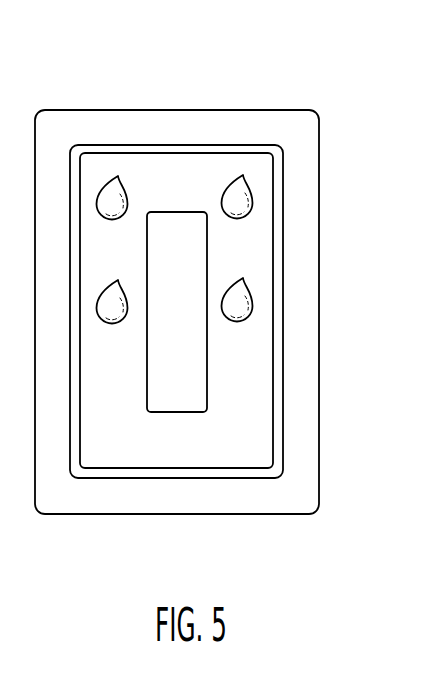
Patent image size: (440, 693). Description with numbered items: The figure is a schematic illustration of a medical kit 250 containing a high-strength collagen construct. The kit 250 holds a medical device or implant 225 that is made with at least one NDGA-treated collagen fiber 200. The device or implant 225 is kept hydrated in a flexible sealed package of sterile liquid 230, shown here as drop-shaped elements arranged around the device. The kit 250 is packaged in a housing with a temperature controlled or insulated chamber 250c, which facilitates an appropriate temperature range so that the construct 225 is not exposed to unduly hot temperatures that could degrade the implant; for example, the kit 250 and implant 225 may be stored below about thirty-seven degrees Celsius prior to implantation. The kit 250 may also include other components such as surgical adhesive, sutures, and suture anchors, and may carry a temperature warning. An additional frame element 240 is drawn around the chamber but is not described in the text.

The medical kit 250 is at (186, 92).
The temperature controlled or insulated chamber 250c is at (87, 470).
The housing frame 240 is at (280, 461).
The flexible sealed package of sterile liquid 230 is at (242, 187).
The medical device or implant 225 is at (177, 292).
The NDGA-treated collagen fiber 200 is at (192, 369).